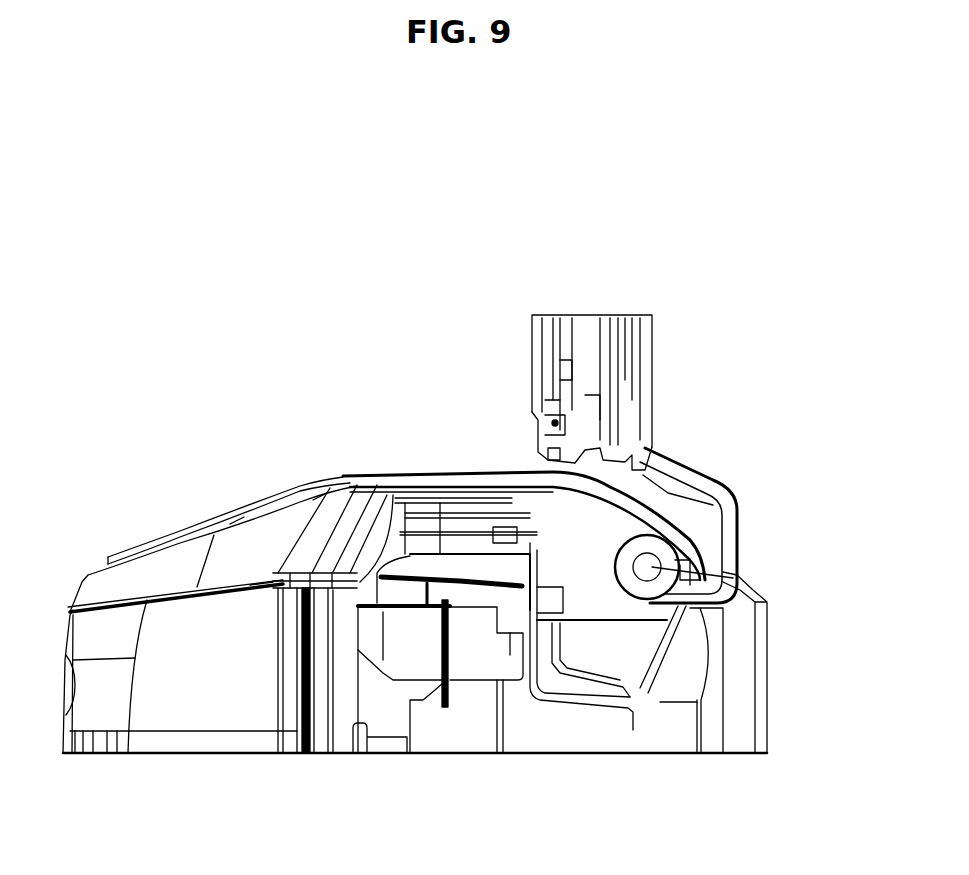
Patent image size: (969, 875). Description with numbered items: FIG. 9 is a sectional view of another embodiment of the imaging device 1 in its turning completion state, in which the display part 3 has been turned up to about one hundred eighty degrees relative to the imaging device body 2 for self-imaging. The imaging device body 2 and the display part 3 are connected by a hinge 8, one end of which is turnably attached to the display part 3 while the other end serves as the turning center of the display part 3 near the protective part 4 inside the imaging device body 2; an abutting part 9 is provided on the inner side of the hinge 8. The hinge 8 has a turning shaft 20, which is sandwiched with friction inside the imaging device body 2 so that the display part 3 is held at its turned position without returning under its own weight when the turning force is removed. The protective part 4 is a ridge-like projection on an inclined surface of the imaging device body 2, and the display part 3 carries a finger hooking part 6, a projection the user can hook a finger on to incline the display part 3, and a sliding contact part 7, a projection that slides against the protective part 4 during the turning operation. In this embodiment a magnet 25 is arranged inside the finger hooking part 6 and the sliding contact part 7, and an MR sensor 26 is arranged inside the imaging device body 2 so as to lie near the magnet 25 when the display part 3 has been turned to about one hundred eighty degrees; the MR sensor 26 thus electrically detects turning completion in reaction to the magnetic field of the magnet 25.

The imaging device 1 is at (109, 354).
The imaging device body 2 is at (165, 745).
The display part 3 is at (600, 315).
The protective part 4 is at (630, 462).
The finger hooking part 6 is at (548, 455).
The sliding contact part 7 is at (620, 480).
The hinge 8 is at (730, 495).
The abutting part 9 is at (715, 542).
The turning shaft 20 is at (763, 597).
The magnet 25 is at (552, 423).
The MR sensor 26 is at (583, 500).